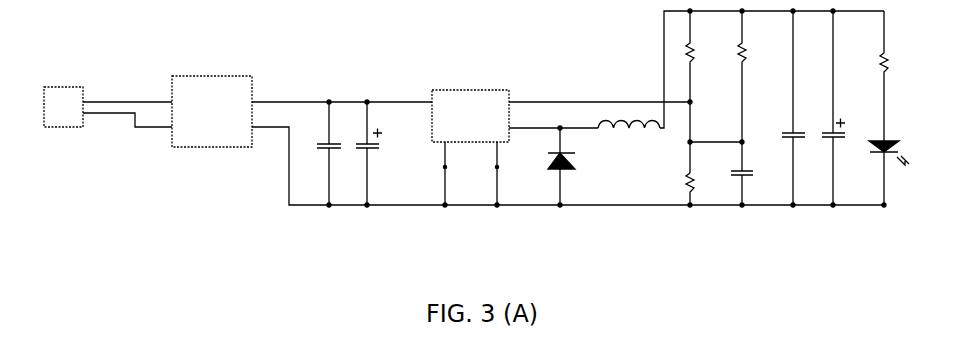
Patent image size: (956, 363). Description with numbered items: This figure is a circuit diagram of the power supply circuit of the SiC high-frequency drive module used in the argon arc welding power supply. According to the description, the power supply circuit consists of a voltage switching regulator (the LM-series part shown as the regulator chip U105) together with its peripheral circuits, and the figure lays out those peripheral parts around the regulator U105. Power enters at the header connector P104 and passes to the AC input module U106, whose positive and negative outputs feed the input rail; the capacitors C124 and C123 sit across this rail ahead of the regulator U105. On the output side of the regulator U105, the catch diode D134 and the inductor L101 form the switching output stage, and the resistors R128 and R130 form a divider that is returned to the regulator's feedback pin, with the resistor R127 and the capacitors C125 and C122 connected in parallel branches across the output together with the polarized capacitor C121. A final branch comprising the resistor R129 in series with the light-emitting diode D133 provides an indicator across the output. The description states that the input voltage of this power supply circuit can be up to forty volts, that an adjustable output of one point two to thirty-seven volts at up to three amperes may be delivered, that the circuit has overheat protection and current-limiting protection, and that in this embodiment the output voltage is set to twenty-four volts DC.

The header connector P104 is at (71, 113).
The AC/DC converter module U106 is at (212, 99).
The capacitor C124 is at (309, 153).
The electrolytic capacitor C123 is at (387, 153).
The LM2596s voltage regulator U105 is at (473, 136).
The diode D134 is at (543, 166).
The inductor L101 is at (629, 138).
The resistor R128 is at (712, 91).
The resistor R130 is at (713, 190).
The resistor R127 is at (765, 76).
The capacitor C125 is at (759, 174).
The capacitor C122 is at (775, 108).
The electrolytic capacitor C121 is at (851, 108).
The resistor R129 is at (908, 76).
The light emitting diode D133 is at (908, 168).